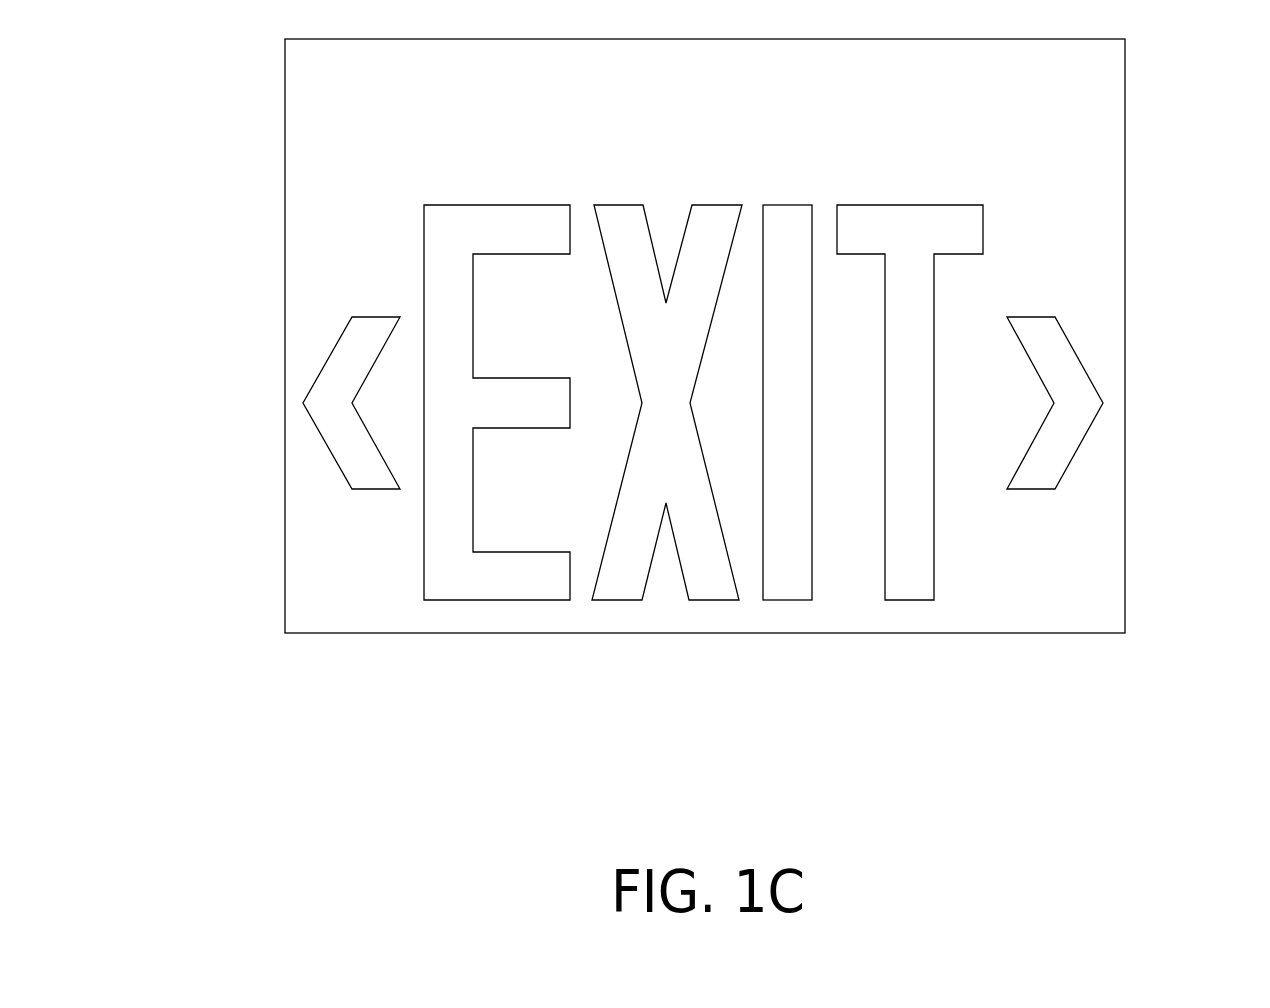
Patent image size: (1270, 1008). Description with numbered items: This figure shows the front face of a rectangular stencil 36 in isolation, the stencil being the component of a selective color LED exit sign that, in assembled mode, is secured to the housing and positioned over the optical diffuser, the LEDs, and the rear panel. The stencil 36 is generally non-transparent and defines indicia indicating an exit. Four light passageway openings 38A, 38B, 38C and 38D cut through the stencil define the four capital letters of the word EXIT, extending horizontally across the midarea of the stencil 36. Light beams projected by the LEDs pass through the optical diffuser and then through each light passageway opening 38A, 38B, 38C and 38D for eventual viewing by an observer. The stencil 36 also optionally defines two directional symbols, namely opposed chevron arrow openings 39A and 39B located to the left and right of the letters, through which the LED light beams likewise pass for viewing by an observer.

The stencil 36 is at (773, 336).
The light passageway opening 38A is at (478, 368).
The light passageway opening 38B is at (647, 363).
The light passageway opening 38C is at (815, 368).
The light passageway opening 38D is at (923, 368).
The chevron arrow opening 39A is at (340, 424).
The chevron arrow opening 39B is at (1129, 414).